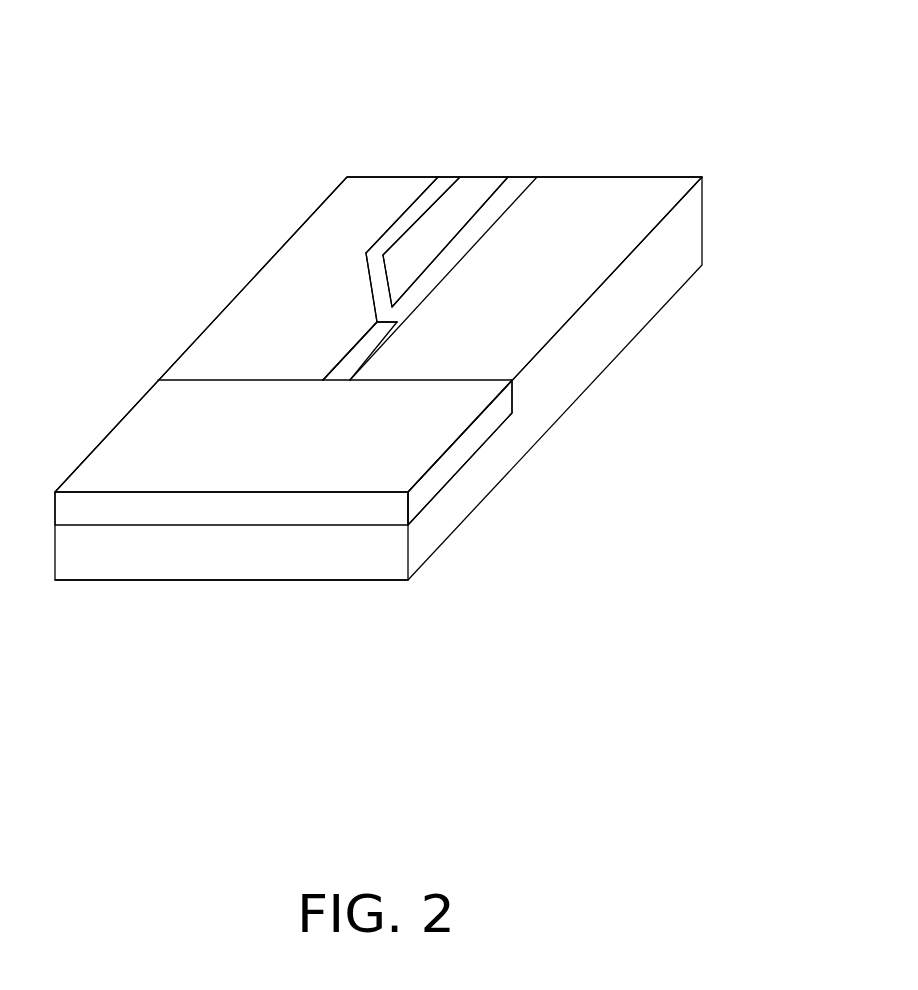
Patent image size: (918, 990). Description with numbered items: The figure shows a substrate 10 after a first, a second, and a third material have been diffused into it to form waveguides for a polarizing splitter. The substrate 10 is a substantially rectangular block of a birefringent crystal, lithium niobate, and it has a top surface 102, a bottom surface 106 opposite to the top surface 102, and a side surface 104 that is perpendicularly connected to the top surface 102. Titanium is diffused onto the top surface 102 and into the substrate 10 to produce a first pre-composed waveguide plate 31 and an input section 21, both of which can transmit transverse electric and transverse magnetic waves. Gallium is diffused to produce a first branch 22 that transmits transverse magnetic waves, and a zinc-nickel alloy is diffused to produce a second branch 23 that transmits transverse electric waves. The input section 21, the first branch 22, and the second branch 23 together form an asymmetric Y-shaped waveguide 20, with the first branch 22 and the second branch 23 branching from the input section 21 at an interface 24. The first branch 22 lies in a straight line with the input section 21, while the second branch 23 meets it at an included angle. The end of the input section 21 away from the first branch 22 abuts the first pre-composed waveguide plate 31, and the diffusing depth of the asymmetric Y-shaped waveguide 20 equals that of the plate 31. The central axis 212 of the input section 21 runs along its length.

The substrate 10 is at (628, 311).
The top surface 102 is at (602, 200).
The side surface 104 is at (308, 509).
The bottom surface 106 is at (129, 600).
The first pre-composed waveguide plate 31 is at (474, 443).
The asymmetric Y-shaped waveguide 20 is at (358, 62).
The input section 21 is at (363, 337).
The first branch 22 is at (432, 268).
The second branch 23 is at (423, 207).
The interface 24 is at (378, 320).
The central axis 212 is at (345, 370).